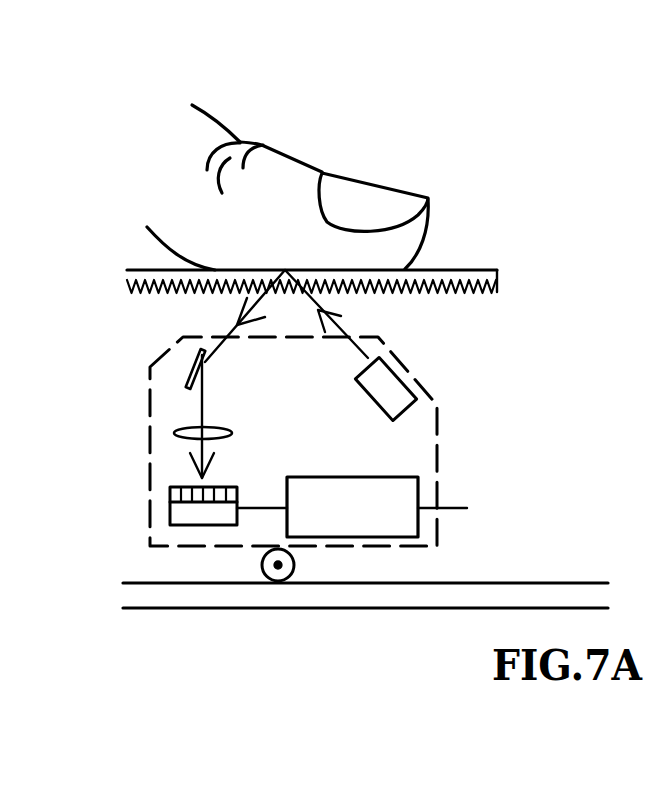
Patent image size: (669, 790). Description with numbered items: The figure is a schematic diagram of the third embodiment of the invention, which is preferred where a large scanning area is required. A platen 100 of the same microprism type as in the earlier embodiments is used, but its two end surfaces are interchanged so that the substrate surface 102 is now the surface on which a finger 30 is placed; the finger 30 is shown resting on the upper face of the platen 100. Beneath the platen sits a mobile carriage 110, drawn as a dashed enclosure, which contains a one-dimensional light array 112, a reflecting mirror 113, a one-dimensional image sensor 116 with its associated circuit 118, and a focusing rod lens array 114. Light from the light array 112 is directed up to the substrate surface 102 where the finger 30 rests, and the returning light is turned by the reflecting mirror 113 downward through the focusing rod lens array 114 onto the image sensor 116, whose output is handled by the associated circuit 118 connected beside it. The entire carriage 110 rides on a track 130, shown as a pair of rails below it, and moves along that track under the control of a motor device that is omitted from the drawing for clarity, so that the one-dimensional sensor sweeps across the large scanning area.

The finger 30 is at (254, 218).
The platen 100 is at (457, 278).
The substrate surface 102 is at (343, 270).
The mobile carriage 110 is at (420, 391).
The 1-D light array 112 is at (383, 383).
The reflecting mirror 113 is at (186, 368).
The focusing rod lens array 114 is at (233, 433).
The 1-D image sensor 116 is at (200, 510).
The associated circuit 118 is at (374, 514).
The track 130 is at (498, 602).